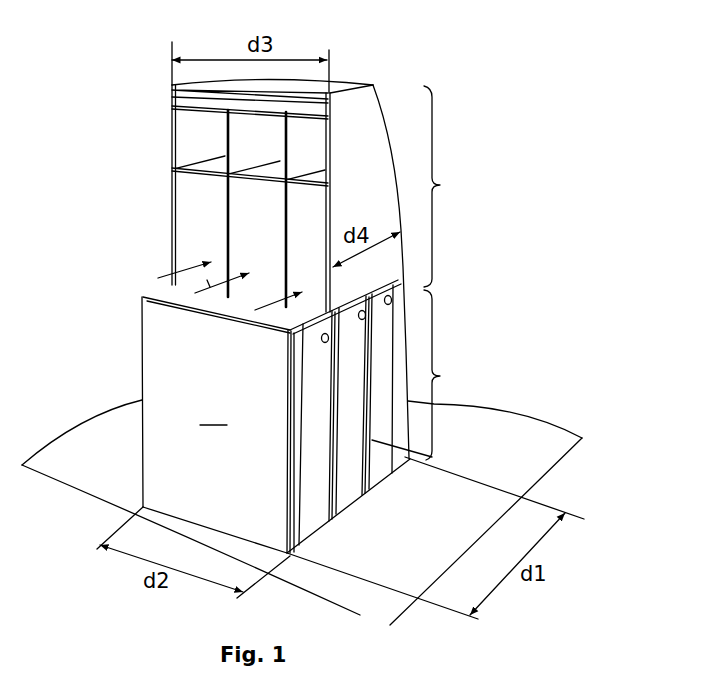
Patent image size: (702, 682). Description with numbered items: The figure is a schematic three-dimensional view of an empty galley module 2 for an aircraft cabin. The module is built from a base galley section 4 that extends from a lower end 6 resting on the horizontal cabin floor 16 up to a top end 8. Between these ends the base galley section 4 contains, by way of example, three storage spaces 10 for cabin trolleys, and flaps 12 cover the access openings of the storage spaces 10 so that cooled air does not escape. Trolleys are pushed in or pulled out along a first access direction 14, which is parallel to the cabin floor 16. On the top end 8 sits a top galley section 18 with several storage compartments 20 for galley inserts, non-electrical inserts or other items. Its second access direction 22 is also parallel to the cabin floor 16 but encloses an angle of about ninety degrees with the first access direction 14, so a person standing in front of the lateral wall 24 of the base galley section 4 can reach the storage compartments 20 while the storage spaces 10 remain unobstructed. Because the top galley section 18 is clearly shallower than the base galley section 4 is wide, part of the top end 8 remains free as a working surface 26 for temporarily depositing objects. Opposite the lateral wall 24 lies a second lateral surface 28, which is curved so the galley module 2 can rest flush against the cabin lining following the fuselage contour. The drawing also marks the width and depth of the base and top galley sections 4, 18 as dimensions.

The galley module 2 is at (379, 69).
The base galley section 4 is at (443, 375).
The lower end 6 is at (135, 502).
The top end 8 is at (135, 293).
The storage spaces 10 is at (318, 538).
The flaps 12 is at (308, 415).
The first access direction 14 is at (301, 497).
The cabin floor 16 is at (548, 437).
The top galley section 18 is at (454, 186).
The storage compartments 20 is at (317, 223).
The second access direction 22 is at (262, 362).
The lateral wall 24 is at (184, 402).
The working surface 26 is at (262, 293).
The second lateral surface 28 is at (397, 95).